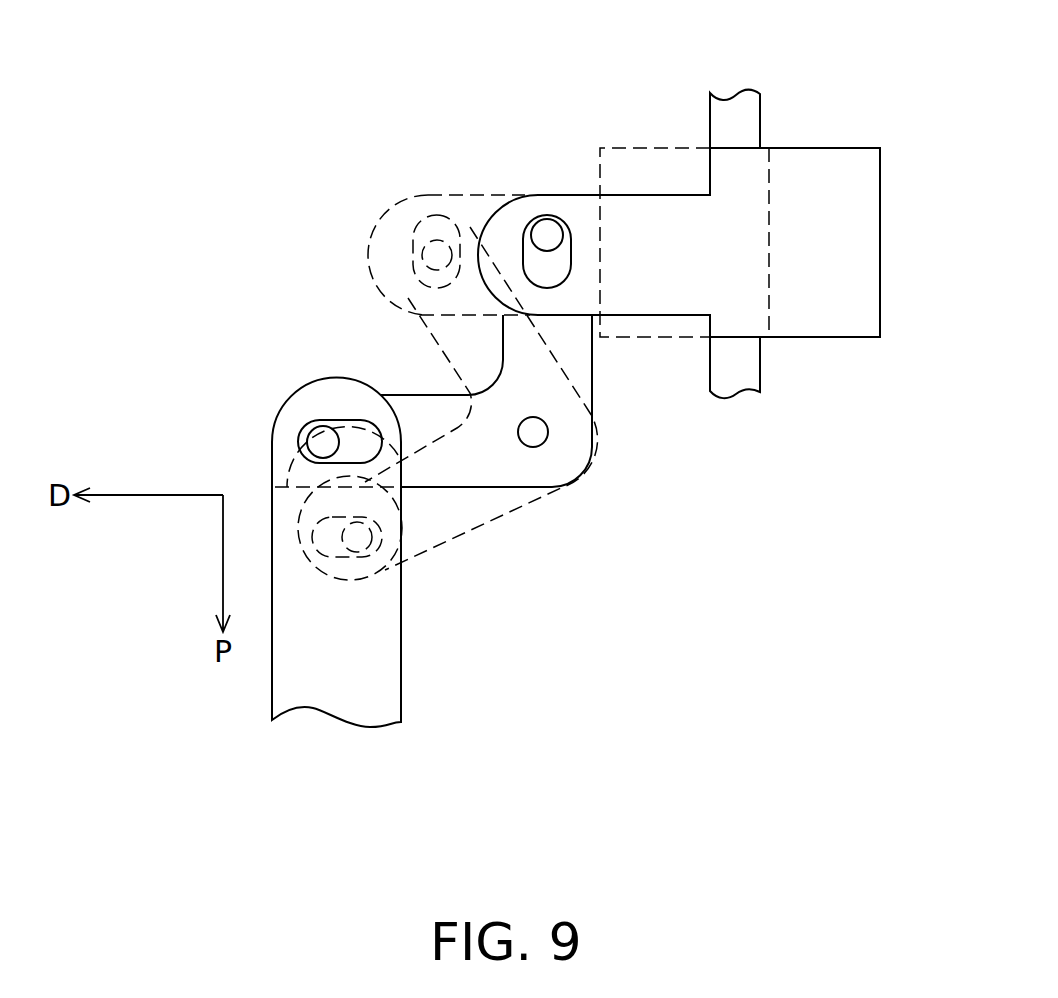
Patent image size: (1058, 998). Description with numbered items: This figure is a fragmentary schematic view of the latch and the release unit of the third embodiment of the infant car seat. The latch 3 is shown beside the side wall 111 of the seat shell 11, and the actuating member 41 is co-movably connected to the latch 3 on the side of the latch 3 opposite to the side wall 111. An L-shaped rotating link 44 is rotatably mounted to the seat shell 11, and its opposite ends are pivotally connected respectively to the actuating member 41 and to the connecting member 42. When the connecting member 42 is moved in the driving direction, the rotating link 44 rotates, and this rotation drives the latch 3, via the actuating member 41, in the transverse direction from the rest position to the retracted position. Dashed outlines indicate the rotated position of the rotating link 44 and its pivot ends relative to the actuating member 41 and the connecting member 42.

The latch 3 is at (843, 262).
The side wall 111 is at (736, 115).
The actuating member 41 is at (513, 223).
The L-shaped rotating link 44 is at (507, 465).
The seat shell 11 is at (537, 436).
The connecting member 42 is at (362, 672).